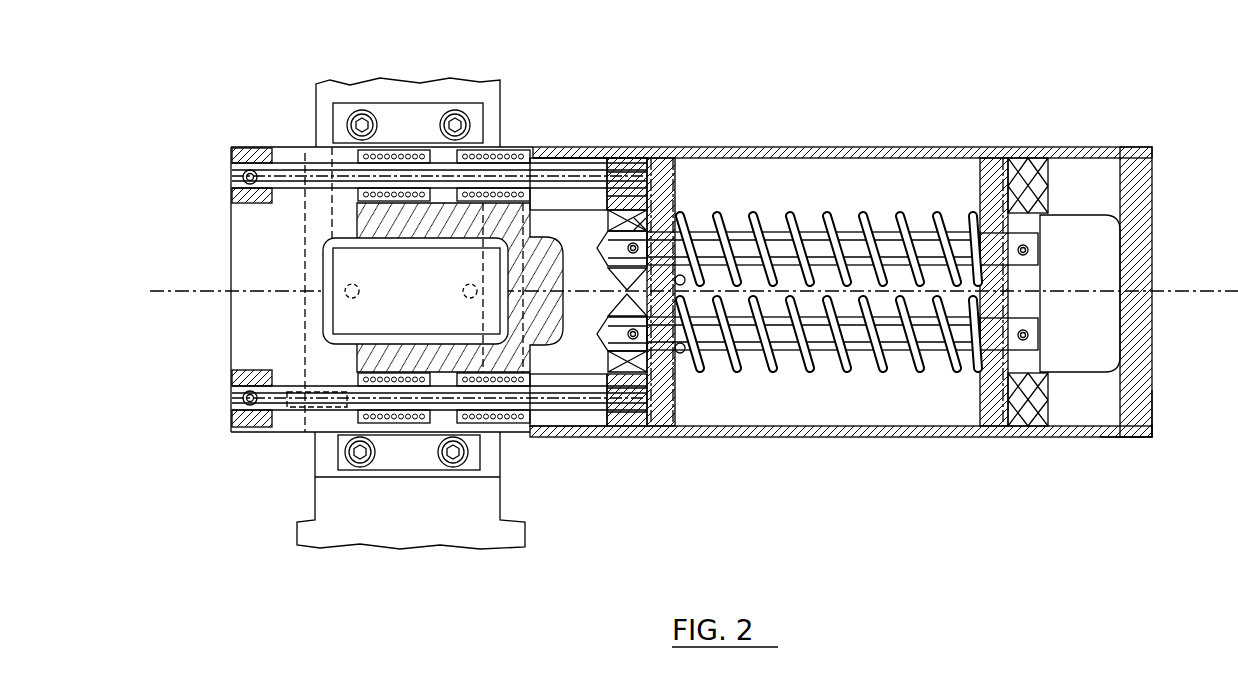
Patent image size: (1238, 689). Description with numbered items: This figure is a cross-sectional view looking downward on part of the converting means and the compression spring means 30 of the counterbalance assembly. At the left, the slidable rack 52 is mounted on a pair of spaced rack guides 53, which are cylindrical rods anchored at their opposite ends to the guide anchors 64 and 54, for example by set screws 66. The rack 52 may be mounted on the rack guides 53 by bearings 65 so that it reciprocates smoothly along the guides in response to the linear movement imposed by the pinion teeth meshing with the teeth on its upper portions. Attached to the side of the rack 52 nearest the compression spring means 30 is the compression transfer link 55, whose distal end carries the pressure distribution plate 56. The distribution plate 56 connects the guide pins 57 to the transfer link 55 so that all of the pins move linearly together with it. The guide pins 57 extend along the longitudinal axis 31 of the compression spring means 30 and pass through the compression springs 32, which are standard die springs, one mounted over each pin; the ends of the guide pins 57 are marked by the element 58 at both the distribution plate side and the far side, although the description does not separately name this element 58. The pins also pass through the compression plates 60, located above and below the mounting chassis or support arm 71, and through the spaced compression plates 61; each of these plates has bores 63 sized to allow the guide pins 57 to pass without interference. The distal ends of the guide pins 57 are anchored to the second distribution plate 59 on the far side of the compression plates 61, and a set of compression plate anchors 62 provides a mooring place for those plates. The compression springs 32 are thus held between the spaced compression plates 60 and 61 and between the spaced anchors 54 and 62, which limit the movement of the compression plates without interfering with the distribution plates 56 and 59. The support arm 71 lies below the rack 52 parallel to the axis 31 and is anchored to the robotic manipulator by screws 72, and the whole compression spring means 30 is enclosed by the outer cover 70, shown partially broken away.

The compression spring means 30 is at (880, 436).
The longitudinal axis 31 is at (1172, 291).
The compression springs 32 is at (895, 218).
The rack 52 is at (370, 360).
The rack guides 53 is at (570, 178).
The guide anchor 54 is at (630, 165).
The compression transfer link 55 is at (637, 150).
The pressure distribution plate 56 is at (656, 228).
The guide pins 57 is at (820, 240).
The shaft end 58 is at (640, 247).
The second distribution plate 59 is at (1032, 285).
The compression plates 60 is at (642, 223).
The compression plates 61 is at (996, 168).
The compression plate anchors 62 is at (1030, 185).
The bores 63 is at (707, 372).
The guide anchor 64 is at (233, 148).
The bearings 65 is at (418, 152).
The set screws 66 is at (243, 177).
The outer cover 70 is at (1105, 440).
The support arm 71 is at (388, 470).
The screws 72 is at (358, 462).